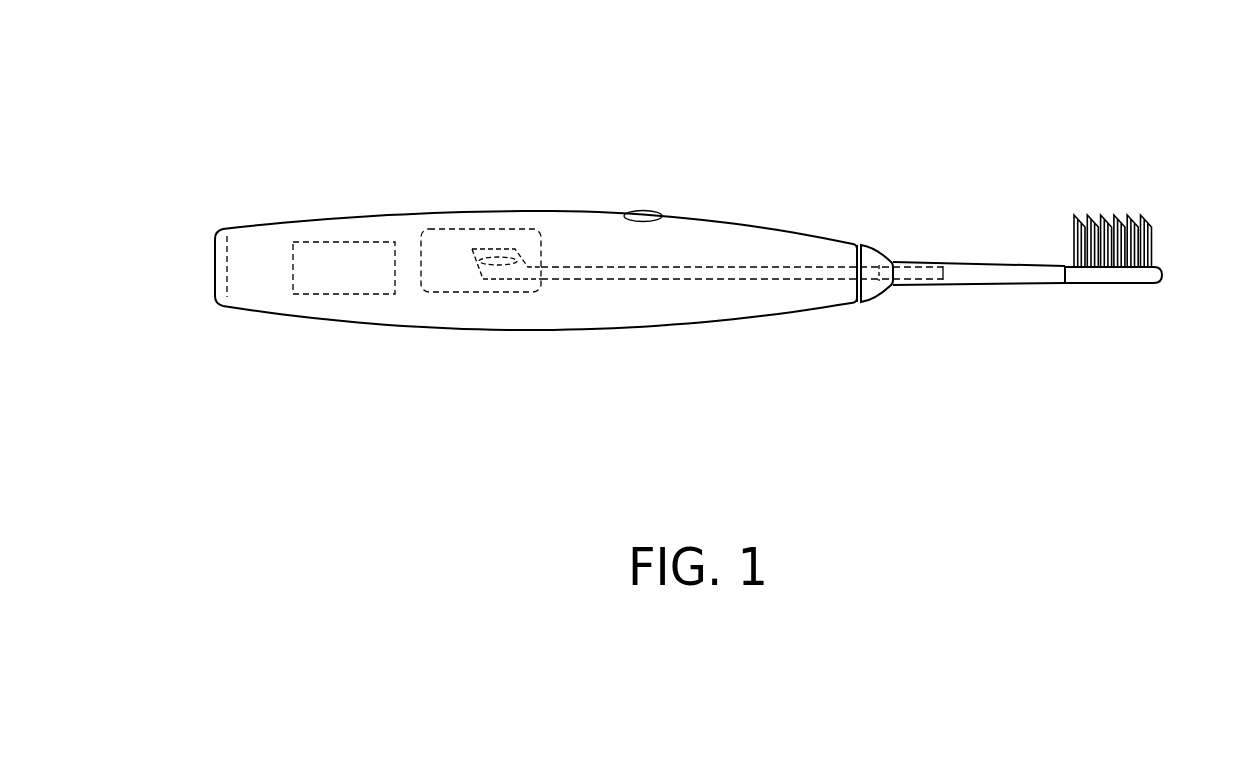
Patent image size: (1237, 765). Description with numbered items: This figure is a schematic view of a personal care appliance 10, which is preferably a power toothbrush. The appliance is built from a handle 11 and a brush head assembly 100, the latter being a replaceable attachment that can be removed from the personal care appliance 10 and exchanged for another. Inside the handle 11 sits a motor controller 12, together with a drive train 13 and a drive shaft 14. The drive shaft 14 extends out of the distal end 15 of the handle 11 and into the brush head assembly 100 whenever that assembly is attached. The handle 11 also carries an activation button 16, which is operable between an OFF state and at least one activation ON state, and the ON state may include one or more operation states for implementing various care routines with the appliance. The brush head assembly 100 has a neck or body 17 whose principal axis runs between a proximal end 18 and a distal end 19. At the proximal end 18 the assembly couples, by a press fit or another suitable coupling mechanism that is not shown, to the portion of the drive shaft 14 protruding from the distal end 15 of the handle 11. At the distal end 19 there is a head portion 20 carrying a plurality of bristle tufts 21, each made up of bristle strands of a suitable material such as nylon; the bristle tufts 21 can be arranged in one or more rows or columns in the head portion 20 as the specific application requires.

The personal care appliance 10 is at (274, 113).
The handle 11 is at (438, 315).
The motor controller 12 is at (358, 242).
The drive train 13 is at (450, 229).
The drive shaft 14 is at (763, 279).
The distal end of the handle 15 is at (883, 318).
The activation button 16 is at (645, 211).
The neck or body 17 is at (1027, 273).
The proximal end of the brush head assembly 18 is at (881, 237).
The distal end of the brush head assembly 19 is at (1175, 318).
The head portion 20 is at (1100, 277).
The bristle tufts 21 is at (1108, 222).
The brush head assembly 100 is at (980, 284).